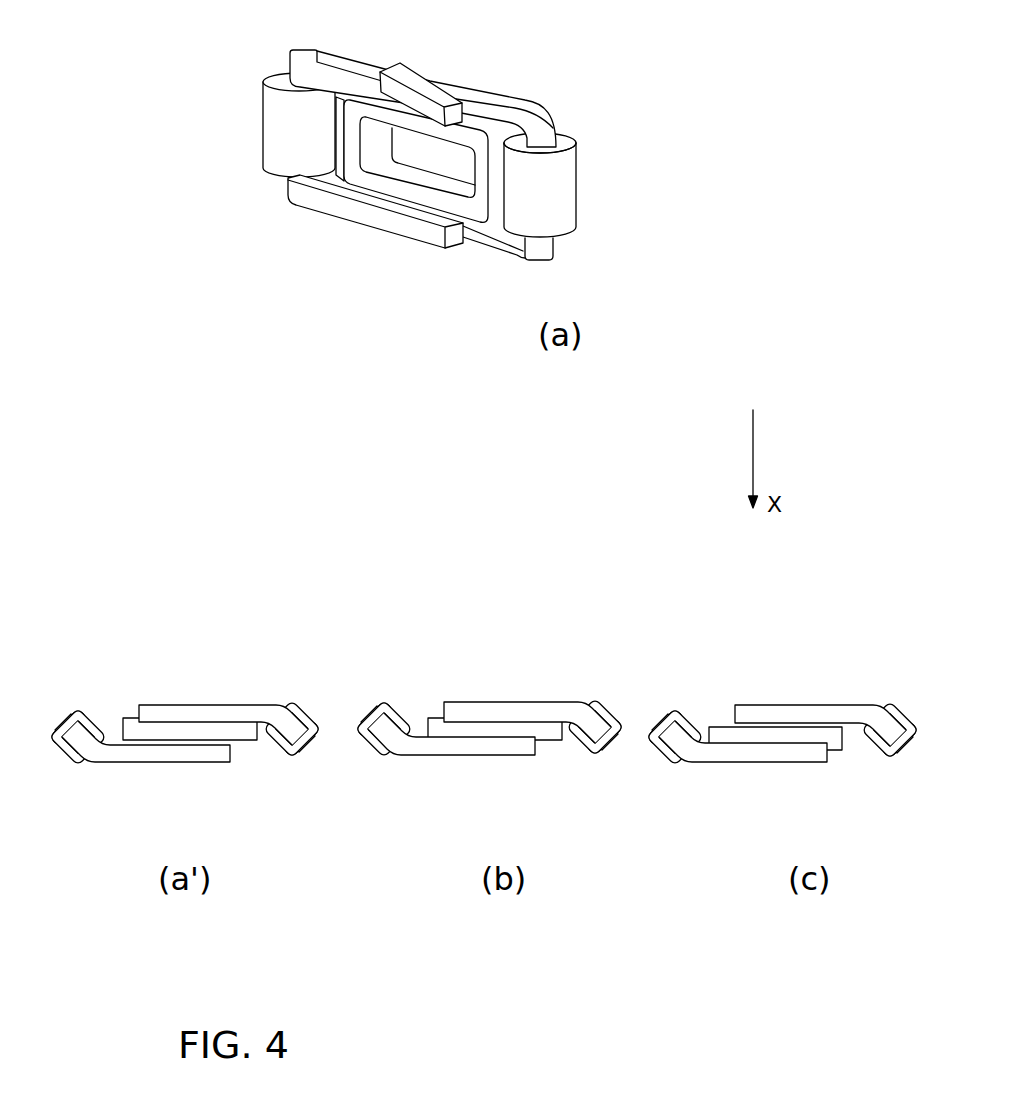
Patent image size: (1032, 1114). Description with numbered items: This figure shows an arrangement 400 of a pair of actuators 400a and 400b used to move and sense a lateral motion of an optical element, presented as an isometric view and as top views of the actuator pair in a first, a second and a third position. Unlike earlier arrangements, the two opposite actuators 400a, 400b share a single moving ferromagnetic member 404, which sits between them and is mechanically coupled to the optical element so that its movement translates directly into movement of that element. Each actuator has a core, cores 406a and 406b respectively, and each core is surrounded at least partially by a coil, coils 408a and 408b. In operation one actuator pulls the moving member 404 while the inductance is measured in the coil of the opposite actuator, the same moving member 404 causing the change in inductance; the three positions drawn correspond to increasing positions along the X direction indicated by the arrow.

The arrangement 400 is at (557, 26).
The actuator 400a is at (250, 90).
The actuator 400b is at (589, 160).
The moving ferromagnetic member 404 is at (392, 190).
The core 406a is at (392, 735).
The core 406b is at (598, 738).
The coil 408a is at (373, 748).
The coil 408b is at (592, 703).